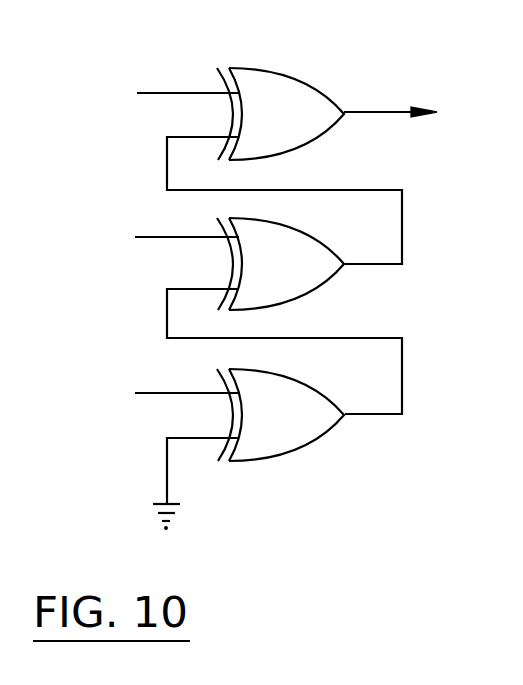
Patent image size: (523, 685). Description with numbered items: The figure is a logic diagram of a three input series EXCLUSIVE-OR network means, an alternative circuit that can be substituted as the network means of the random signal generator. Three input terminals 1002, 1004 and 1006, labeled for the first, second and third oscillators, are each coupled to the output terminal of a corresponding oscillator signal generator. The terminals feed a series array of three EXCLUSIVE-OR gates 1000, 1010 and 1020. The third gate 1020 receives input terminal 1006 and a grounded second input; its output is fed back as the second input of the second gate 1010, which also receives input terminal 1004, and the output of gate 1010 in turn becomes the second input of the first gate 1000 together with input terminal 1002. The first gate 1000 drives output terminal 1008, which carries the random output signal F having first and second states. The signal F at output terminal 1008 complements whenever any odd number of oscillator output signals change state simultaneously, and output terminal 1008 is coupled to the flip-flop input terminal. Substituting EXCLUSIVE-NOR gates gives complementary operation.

The EXCLUSIVE-OR gate 1000 is at (300, 128).
The input terminal 1002 is at (147, 92).
The input terminal 1004 is at (147, 236).
The input terminal 1006 is at (143, 392).
The output terminal 1008 is at (420, 105).
The EXCLUSIVE-OR gate 1010 is at (300, 281).
The EXCLUSIVE-OR gate 1020 is at (306, 430).